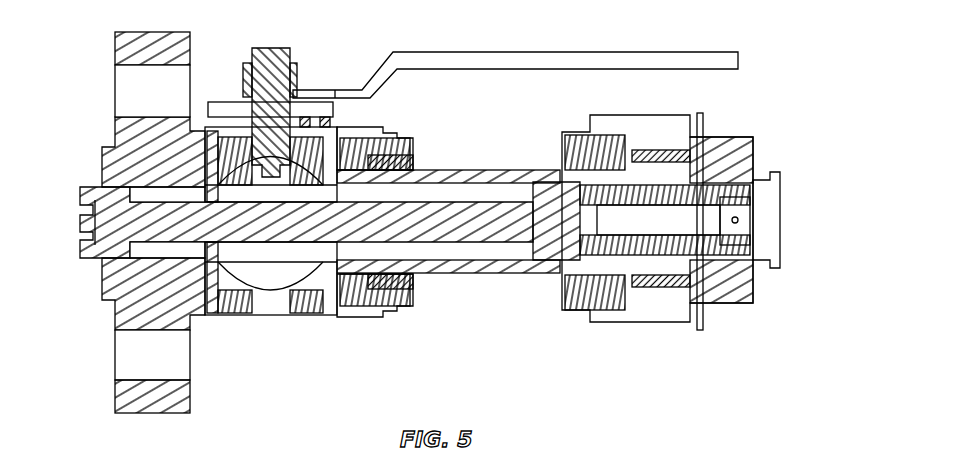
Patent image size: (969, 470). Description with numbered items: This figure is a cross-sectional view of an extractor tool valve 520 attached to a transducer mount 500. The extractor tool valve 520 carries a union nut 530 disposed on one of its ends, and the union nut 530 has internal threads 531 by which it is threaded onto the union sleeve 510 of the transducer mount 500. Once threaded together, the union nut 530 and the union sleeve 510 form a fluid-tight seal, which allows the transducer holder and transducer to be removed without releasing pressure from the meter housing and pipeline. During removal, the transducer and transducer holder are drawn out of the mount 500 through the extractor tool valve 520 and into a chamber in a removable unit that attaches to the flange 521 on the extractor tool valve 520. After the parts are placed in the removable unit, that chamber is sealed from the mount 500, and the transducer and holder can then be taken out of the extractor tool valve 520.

The transducer mount 500 is at (443, 212).
The union sleeve 510 is at (640, 300).
The extractor tool valve 520 is at (485, 45).
The flange 521 is at (100, 288).
The union nut 530 is at (672, 112).
The internal threads 531 is at (668, 290).